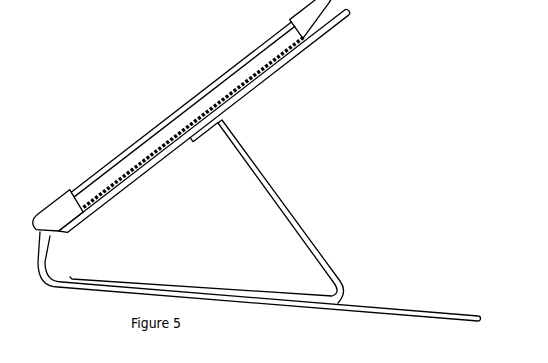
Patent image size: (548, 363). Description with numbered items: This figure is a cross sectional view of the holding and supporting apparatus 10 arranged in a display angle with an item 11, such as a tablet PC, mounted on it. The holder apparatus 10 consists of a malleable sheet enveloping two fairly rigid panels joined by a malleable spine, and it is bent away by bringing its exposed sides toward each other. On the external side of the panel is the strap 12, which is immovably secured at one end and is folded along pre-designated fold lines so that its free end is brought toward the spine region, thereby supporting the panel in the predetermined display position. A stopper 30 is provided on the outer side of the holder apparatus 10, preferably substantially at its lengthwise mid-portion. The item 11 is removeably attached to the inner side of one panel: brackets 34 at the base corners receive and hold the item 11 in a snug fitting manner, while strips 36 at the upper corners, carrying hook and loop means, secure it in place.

The holding and supporting apparatus 10 is at (372, 313).
The item 11 is at (147, 145).
The strap 12 is at (292, 210).
The stopper 30 is at (253, 81).
The bracket 34 is at (72, 211).
The strip 36 is at (313, 25).